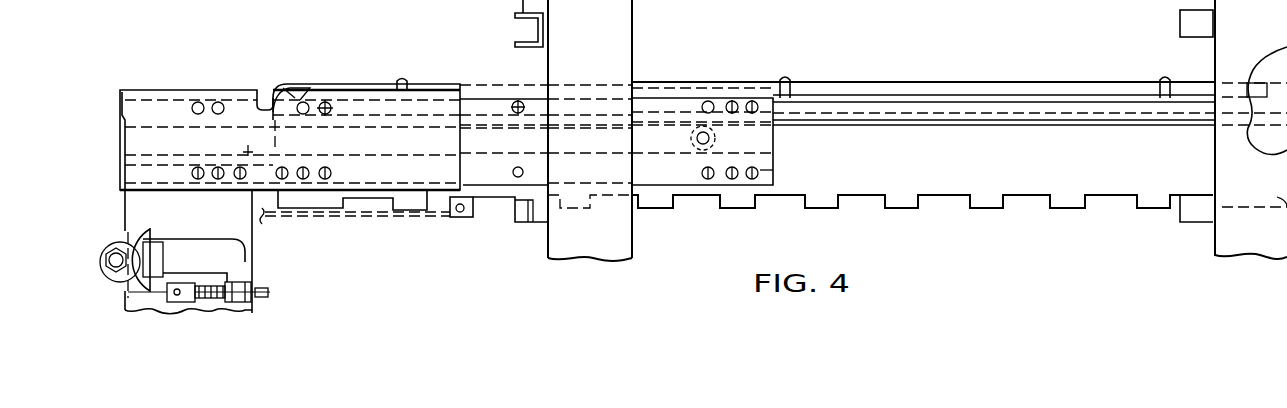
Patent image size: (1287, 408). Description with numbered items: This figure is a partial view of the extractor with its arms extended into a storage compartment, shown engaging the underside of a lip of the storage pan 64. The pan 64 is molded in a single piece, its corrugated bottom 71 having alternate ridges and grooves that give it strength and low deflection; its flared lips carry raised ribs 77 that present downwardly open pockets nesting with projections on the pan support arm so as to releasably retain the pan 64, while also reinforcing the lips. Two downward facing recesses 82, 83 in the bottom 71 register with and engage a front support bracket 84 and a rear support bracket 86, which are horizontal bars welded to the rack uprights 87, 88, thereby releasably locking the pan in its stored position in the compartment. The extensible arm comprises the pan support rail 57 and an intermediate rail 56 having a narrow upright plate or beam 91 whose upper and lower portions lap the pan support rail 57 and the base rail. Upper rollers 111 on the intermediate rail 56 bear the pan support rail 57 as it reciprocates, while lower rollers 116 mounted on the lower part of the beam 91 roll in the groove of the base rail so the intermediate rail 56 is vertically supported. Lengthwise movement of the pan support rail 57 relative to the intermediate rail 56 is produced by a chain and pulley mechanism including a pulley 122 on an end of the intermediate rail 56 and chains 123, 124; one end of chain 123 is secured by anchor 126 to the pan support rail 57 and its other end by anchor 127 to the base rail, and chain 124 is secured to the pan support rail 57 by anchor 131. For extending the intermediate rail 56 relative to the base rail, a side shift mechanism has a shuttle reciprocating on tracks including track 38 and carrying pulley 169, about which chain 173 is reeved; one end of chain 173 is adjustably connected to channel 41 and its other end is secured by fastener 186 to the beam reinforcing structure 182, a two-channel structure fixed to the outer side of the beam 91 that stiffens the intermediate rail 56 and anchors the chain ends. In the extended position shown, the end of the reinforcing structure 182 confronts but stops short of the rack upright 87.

The beam reinforcing structure 182 is at (159, 103).
The rollers 111 is at (215, 102).
The raised ribs 77 is at (403, 80).
The rack upright 87 is at (623, 55).
The pan support rail 57 is at (985, 85).
The rear support bracket 86 is at (1182, 22).
The rack upright 88 is at (1220, 56).
The anchor 127 is at (250, 157).
The anchor 131 is at (280, 124).
The lower rollers 116 is at (200, 182).
The chain 124 is at (607, 157).
The pulley 122 is at (718, 139).
The intermediate rail 56 is at (778, 150).
The chain 123 is at (850, 128).
The anchor 126 is at (1286, 130).
The pulley 169 is at (128, 234).
The track 38 is at (215, 270).
The channel 41 is at (257, 307).
The chain 173 is at (333, 217).
The fastener 186 is at (465, 220).
The recess 82 is at (528, 202).
The front support bracket 84 is at (532, 225).
The upright plate or beam 91 is at (773, 173).
The pan bottom 71 is at (815, 210).
The pan 64 is at (946, 212).
The recess 83 is at (1188, 197).